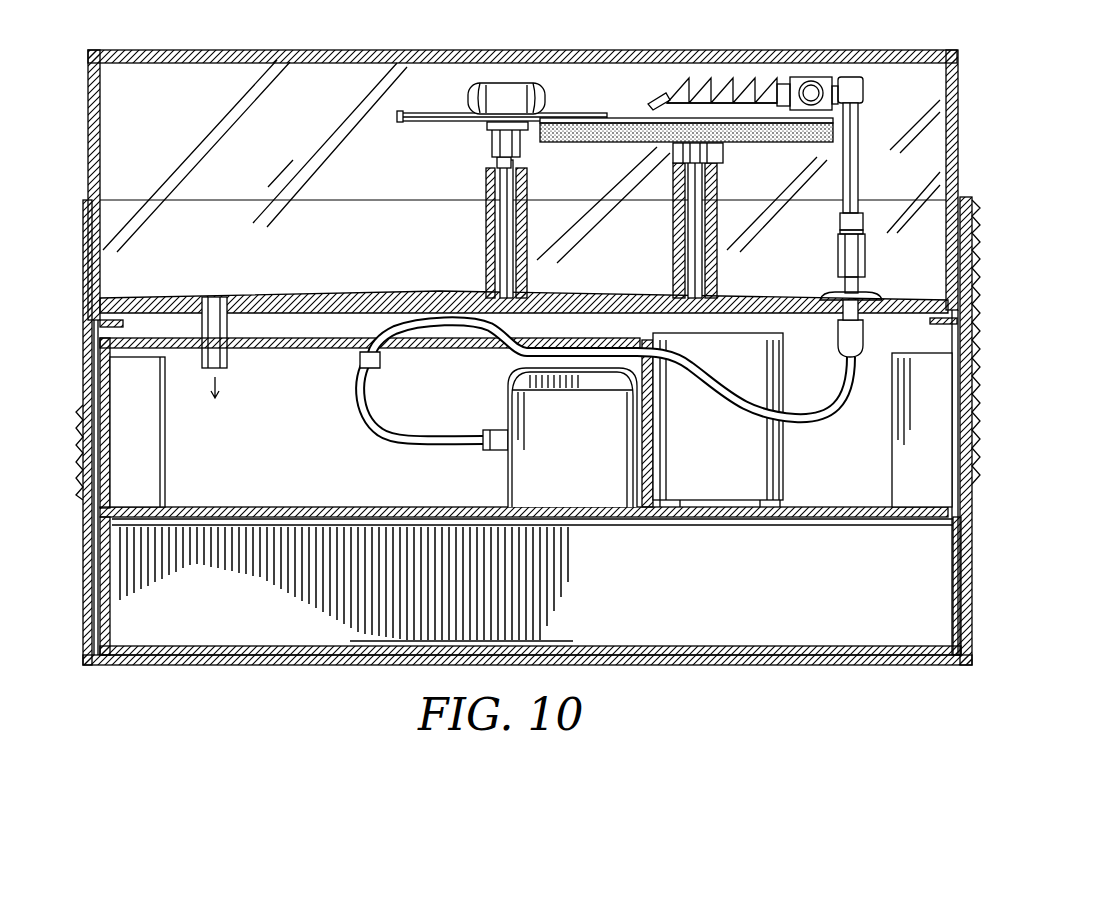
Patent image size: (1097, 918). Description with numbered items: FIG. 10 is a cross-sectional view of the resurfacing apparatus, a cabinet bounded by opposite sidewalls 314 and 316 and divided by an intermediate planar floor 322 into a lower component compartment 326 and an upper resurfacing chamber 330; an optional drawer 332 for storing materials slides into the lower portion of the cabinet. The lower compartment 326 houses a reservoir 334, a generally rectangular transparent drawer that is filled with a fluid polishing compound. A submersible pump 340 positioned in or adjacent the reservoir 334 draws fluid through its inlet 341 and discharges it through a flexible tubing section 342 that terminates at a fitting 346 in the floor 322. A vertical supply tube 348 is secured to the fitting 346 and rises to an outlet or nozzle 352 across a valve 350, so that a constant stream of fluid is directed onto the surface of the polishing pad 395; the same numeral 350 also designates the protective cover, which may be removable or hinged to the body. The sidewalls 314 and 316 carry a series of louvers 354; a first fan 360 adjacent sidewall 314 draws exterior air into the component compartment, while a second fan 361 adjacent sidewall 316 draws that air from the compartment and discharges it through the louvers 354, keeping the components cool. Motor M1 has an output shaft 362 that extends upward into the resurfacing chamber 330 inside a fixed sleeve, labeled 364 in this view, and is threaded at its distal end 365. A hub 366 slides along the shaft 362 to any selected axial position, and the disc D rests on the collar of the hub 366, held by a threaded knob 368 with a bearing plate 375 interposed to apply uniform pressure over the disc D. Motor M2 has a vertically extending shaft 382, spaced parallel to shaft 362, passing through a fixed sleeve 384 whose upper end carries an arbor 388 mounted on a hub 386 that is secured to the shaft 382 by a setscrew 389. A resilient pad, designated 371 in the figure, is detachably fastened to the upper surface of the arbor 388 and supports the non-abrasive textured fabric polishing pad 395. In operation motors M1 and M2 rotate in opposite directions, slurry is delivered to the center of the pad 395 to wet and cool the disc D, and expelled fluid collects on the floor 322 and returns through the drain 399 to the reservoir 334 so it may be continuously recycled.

The sidewall 314 is at (82, 230).
The sidewall 316 is at (972, 357).
The intermediate planar floor 322 is at (352, 298).
The lower component compartment 326 is at (845, 478).
The upper resurfacing chamber 330 is at (343, 238).
The drawer 332 is at (120, 600).
The reservoir 334 is at (287, 455).
The submersible pump 340 is at (580, 463).
The inlet 341 is at (490, 466).
The flexible tubing section 342 is at (846, 392).
The fitting 346 is at (862, 275).
The vertical supply tube 348 is at (858, 135).
The valve 350 is at (757, 50).
The outlet or nozzle 352 is at (668, 82).
The louvers 354 is at (80, 445).
The first fan 360 is at (145, 433).
The second fan 361 is at (930, 410).
The output shaft 362 is at (486, 222).
The post 364 is at (527, 268).
The threaded end 365 is at (492, 163).
The hub 366 is at (487, 145).
The threaded knob 368 is at (543, 83).
The slab 371 is at (818, 146).
The bearing plate 375 is at (400, 114).
The shaft 382 is at (675, 264).
The fixed sleeve 384 is at (675, 216).
The hub 386 is at (672, 157).
The arbor 388 is at (737, 143).
The setscrew 389 is at (675, 165).
The polishing pad 395 is at (798, 146).
The drain tube 399 is at (218, 284).
The disc D is at (387, 127).
The motor M1 is at (460, 305).
The motor M2 is at (700, 445).